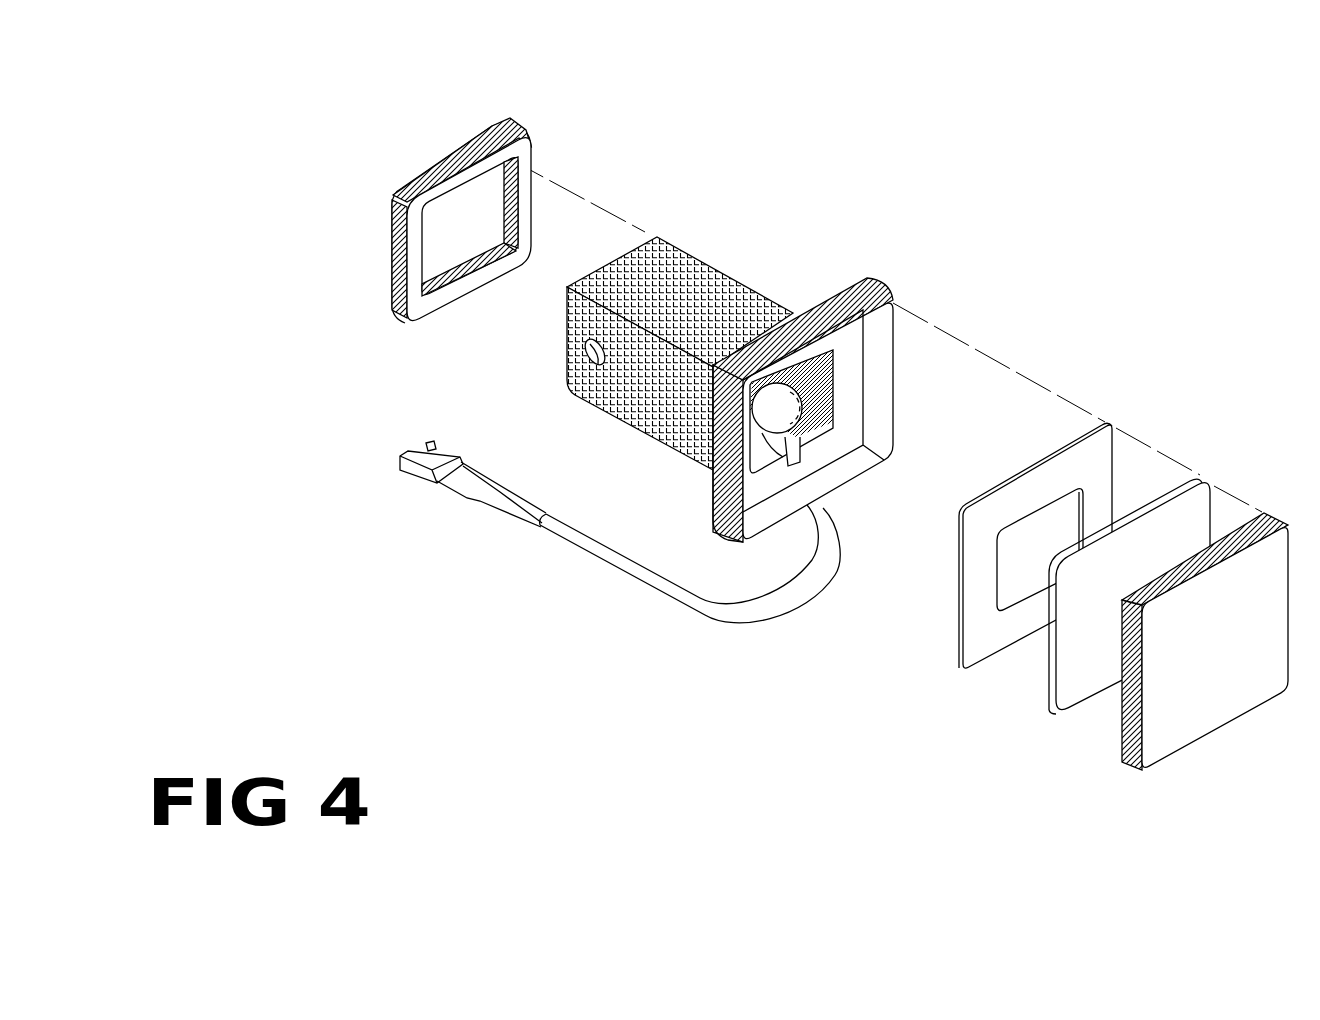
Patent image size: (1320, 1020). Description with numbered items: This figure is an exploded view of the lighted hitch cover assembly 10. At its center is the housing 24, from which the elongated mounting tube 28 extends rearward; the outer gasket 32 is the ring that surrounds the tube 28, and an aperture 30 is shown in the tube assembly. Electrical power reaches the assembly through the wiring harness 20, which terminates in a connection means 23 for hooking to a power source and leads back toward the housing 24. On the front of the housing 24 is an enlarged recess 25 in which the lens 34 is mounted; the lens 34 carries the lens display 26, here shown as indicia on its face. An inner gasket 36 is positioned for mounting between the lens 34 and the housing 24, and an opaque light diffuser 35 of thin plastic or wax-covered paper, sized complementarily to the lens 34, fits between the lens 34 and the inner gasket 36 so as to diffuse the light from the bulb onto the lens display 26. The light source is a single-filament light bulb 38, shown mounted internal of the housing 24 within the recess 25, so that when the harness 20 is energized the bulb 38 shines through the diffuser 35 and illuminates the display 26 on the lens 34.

The trailer hitch cover assembly 10 is at (840, 208).
The wiring harness 20 is at (648, 580).
The connection means 23 is at (420, 475).
The housing 24 is at (845, 447).
The enlarged recess 25 is at (875, 365).
The lens display 26 is at (1217, 727).
The elongated mounting tube 28 is at (654, 280).
The aperture 30 is at (597, 357).
The outer gasket 32 is at (452, 152).
The lens 34 is at (1220, 617).
The lens plate 35 is at (1188, 503).
The inner gasket 36 is at (1000, 482).
The light bulb 38 is at (790, 420).